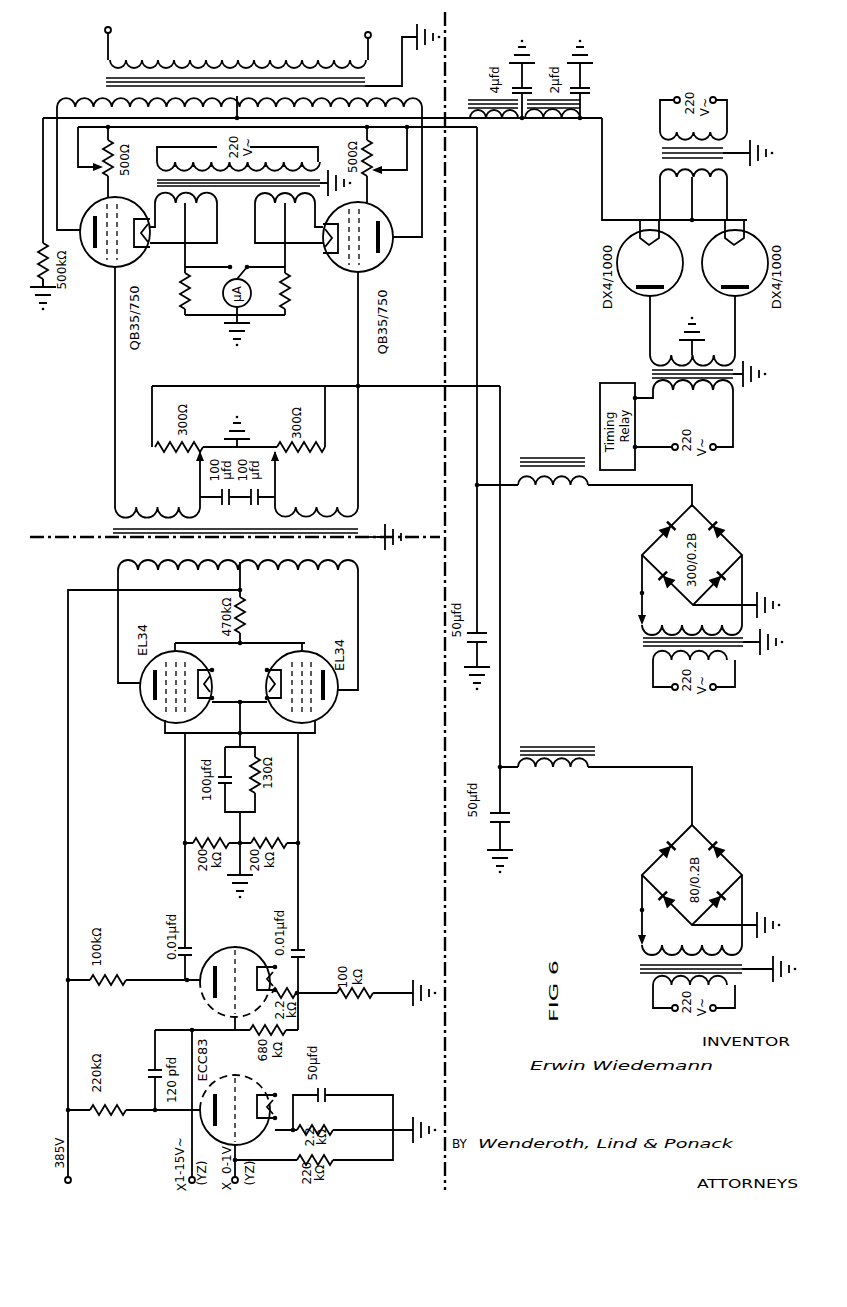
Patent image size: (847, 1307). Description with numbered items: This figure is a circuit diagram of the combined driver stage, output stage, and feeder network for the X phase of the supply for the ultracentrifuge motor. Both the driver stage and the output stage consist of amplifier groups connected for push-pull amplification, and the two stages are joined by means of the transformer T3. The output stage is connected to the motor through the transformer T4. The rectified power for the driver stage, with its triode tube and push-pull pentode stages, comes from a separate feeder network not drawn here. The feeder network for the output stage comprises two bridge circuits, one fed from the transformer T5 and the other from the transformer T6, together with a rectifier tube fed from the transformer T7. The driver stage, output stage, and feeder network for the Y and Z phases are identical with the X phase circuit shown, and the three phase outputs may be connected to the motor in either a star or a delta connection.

The transformer T3 is at (113, 538).
The transformer T4 is at (102, 80).
The transformer T5 is at (640, 963).
The transformer T6 is at (640, 657).
The transformer T7 is at (638, 363).